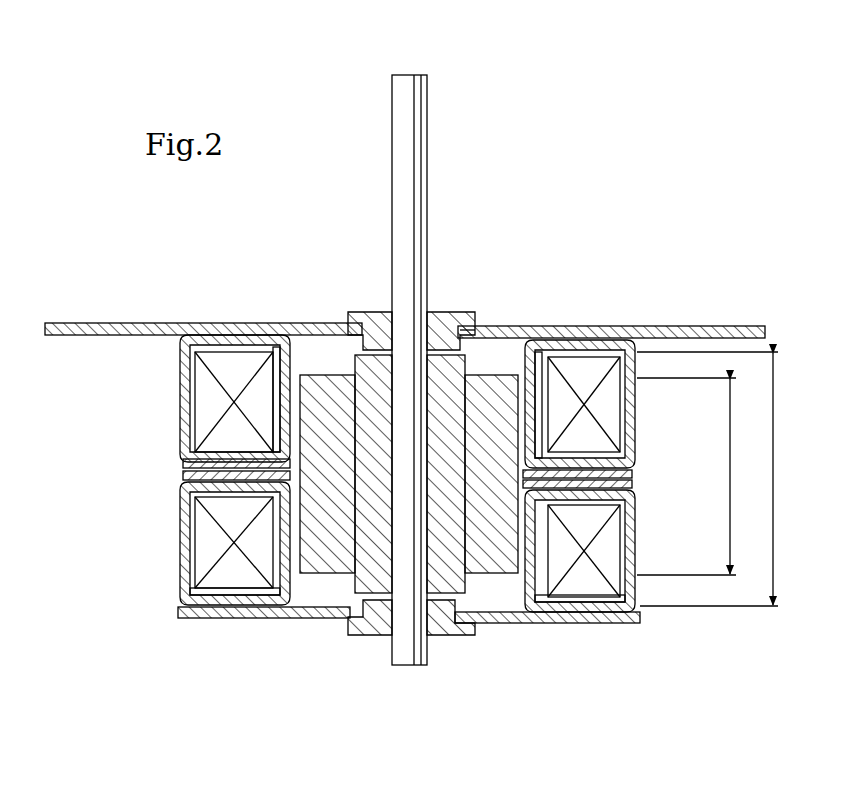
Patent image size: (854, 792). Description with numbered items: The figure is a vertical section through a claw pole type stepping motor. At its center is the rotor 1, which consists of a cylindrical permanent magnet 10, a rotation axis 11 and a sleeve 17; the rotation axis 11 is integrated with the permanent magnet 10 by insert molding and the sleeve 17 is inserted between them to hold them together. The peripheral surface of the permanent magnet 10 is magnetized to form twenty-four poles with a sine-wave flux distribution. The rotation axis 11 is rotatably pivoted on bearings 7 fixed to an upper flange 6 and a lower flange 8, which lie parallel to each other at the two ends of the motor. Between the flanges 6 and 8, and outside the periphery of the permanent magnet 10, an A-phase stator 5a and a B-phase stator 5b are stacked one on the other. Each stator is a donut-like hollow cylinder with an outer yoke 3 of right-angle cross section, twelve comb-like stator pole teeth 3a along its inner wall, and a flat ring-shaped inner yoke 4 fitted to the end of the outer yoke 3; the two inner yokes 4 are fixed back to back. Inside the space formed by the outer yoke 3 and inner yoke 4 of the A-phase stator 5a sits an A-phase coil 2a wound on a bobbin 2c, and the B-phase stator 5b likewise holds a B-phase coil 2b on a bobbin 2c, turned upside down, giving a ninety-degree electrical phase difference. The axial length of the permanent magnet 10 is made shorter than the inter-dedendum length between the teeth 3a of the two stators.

The rotor 1 is at (495, 108).
The A-phase coil 2a is at (605, 415).
The B-phase coil 2b is at (205, 545).
The bobbin 2c is at (212, 323).
The outer yoke 3 is at (180, 430).
The stator pole teeth 3a is at (280, 415).
The inner yoke 4 is at (183, 467).
The A-phase stator 5a is at (82, 338).
The B-phase stator 5b is at (82, 478).
The flange 6 is at (680, 326).
The bearing 7 is at (362, 312).
The flange 8 is at (520, 623).
The cylindrical permanent magnet 10 is at (493, 400).
The rotation axis 11 is at (414, 200).
The sleeve 17 is at (472, 328).